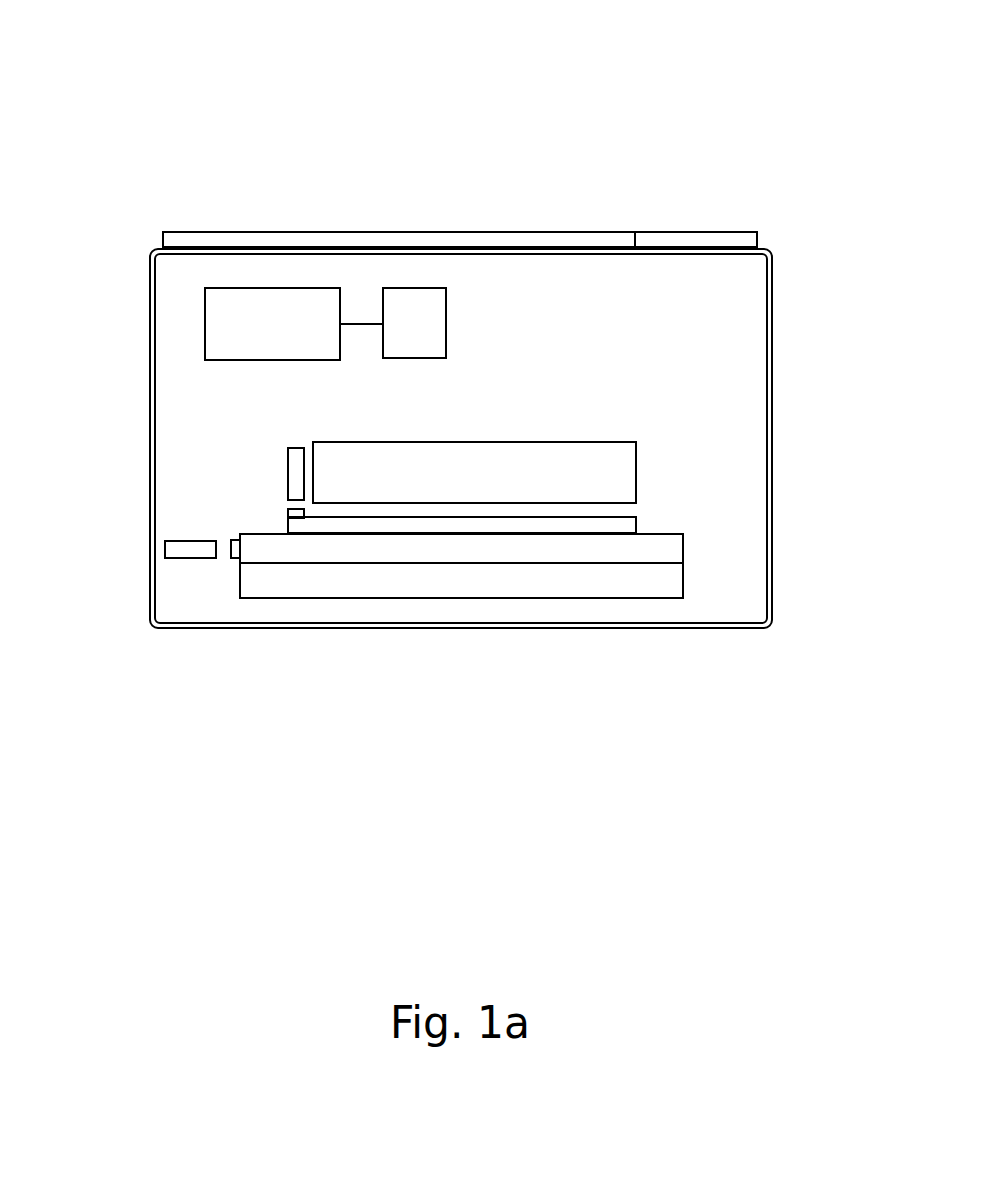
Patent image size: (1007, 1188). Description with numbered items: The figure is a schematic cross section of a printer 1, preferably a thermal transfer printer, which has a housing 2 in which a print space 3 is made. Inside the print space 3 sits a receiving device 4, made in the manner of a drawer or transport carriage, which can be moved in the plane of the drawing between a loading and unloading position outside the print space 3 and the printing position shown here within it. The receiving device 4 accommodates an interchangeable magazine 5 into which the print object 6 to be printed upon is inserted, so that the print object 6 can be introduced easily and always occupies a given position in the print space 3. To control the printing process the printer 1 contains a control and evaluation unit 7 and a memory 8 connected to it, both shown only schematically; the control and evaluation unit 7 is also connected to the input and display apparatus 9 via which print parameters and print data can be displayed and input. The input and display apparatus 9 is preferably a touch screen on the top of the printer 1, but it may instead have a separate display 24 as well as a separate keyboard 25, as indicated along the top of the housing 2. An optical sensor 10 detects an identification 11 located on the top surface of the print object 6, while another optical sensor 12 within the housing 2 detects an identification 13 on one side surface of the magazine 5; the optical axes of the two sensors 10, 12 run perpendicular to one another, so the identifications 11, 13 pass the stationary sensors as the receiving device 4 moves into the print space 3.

The printer 1 is at (630, 667).
The housing 2 is at (738, 622).
The print space 3 is at (664, 504).
The receiving device 4 is at (332, 587).
The magazine 5 is at (411, 550).
The print object 6 is at (515, 526).
The control and evaluation unit 7 is at (273, 306).
The memory 8 is at (414, 318).
The input and display apparatus 9 is at (601, 173).
The optical sensor 10 is at (298, 475).
The identification 11 is at (297, 514).
The optical sensor 12 is at (188, 550).
The identification 13 is at (235, 552).
The display 24 is at (517, 240).
The keyboard 25 is at (693, 240).